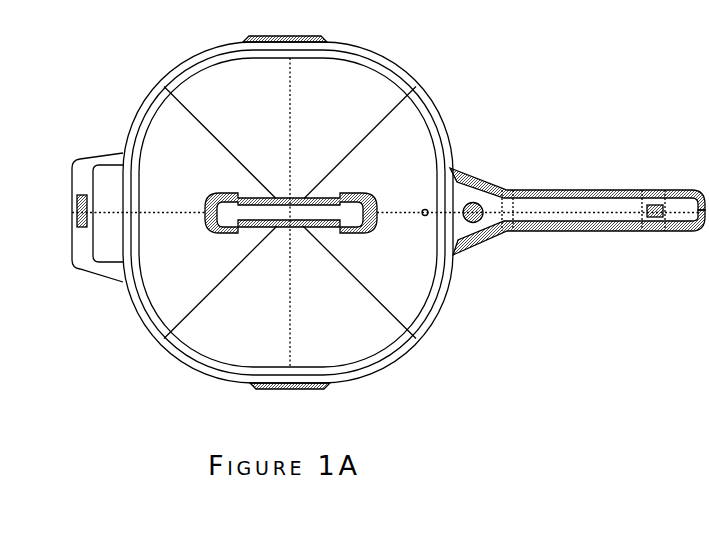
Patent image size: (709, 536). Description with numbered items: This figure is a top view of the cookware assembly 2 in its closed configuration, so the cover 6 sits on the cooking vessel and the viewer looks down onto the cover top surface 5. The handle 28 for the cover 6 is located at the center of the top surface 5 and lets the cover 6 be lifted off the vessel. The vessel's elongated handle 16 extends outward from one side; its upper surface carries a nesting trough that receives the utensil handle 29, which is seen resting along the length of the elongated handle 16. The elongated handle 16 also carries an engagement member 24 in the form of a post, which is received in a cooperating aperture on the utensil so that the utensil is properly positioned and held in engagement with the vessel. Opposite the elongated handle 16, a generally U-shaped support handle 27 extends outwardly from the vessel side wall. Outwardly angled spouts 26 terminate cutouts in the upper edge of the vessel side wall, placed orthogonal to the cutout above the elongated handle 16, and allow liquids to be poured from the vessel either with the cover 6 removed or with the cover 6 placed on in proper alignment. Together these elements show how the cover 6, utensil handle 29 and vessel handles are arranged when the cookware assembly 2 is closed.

The cookware assembly 2 is at (402, 44).
The top surface 5 is at (193, 97).
The cover 6 is at (418, 157).
The elongated handle 16 is at (584, 181).
The engagement member 24 is at (475, 223).
The spout 26 is at (268, 31).
The support handle 27 is at (100, 284).
The handle 28 is at (330, 220).
The utensil handle 29 is at (652, 235).